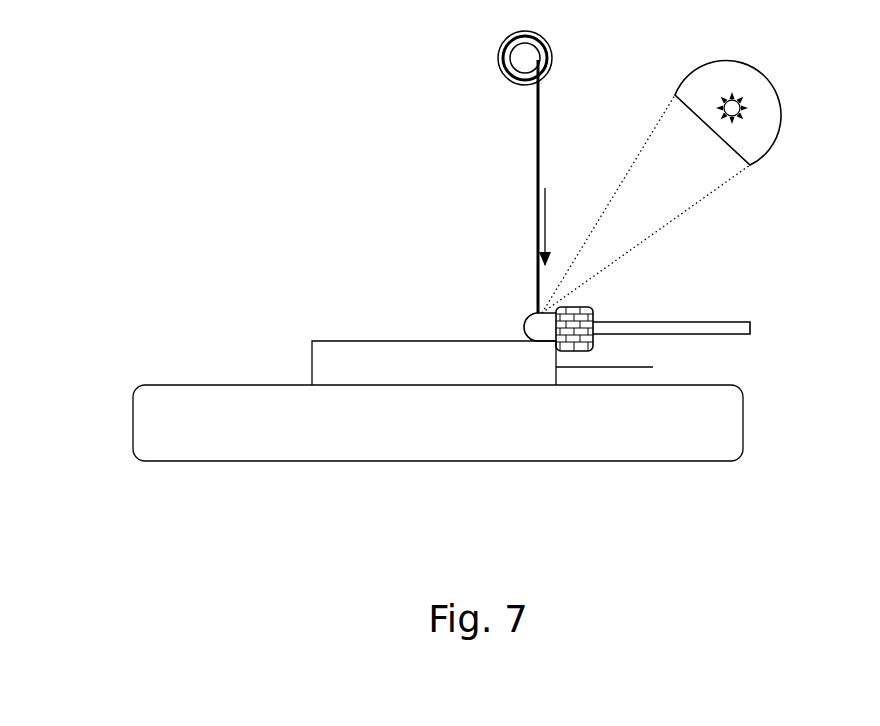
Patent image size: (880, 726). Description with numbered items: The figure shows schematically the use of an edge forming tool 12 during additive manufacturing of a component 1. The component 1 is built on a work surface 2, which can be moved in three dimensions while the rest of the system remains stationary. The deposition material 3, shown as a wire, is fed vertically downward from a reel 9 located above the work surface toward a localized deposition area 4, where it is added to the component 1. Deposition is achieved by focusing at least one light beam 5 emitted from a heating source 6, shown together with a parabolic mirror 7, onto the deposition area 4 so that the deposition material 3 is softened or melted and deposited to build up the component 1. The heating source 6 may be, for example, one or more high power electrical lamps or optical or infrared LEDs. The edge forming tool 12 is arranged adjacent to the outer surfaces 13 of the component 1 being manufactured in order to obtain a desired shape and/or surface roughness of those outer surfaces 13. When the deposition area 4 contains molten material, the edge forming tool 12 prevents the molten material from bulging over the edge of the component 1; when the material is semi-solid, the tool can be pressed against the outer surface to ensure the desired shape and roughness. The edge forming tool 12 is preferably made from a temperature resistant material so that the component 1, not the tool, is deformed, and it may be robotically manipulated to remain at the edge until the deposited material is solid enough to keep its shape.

The component 1 is at (335, 357).
The work surface 2 is at (170, 412).
The deposition material 3 is at (537, 152).
The deposition area 4 is at (508, 307).
The light beam 5 is at (667, 183).
The heating source 6 is at (730, 108).
The parabolic mirror 7 is at (766, 78).
The reel 9 is at (503, 43).
The edge forming tool 12 is at (605, 308).
The outer surfaces 13 is at (623, 367).